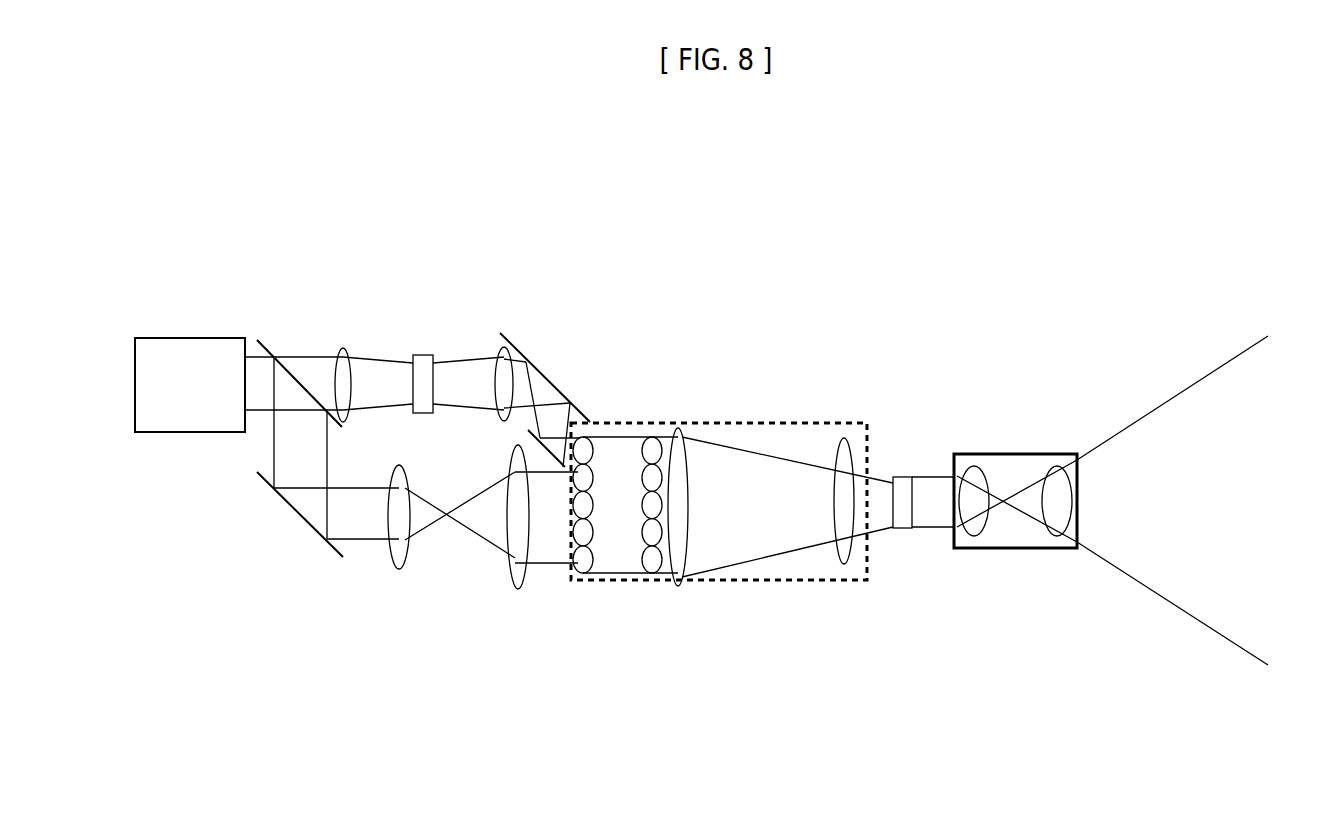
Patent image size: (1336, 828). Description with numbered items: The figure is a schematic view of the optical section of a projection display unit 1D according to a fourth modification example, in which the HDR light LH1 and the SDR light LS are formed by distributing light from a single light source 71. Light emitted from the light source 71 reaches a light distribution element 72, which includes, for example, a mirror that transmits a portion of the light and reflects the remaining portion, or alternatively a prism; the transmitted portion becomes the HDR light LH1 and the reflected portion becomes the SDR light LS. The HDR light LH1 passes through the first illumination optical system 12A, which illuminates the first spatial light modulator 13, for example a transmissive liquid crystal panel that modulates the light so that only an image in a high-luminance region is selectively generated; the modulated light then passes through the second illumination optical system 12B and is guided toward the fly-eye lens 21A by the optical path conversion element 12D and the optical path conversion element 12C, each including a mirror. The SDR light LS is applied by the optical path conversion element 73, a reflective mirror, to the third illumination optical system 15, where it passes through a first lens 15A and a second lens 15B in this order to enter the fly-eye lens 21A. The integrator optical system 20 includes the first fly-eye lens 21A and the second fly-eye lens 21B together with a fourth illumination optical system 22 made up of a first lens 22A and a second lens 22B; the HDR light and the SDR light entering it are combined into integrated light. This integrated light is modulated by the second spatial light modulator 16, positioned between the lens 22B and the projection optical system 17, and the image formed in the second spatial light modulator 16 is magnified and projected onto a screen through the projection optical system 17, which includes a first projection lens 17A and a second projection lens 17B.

The projection display unit 1D is at (940, 222).
The light source 71 is at (187, 338).
The light distribution element 72 is at (272, 353).
The optical path conversion element 73 is at (300, 515).
The first illumination optical system 12A is at (340, 349).
The second illumination optical system 12B is at (497, 349).
The optical path conversion element 12C is at (528, 431).
The optical path conversion element 12D is at (514, 346).
The first spatial light modulator 13 is at (421, 355).
The third illumination optical system 15 is at (460, 572).
The first lens 15A is at (399, 569).
The second lens 15B is at (518, 550).
The second spatial light modulator 16 is at (899, 477).
The projection optical system 17 is at (1111, 500).
The first projection lens 17A is at (971, 466).
The second projection lens 17B is at (1057, 466).
The integrator optical system 20 is at (718, 465).
The first fly-eye lens 21A is at (580, 438).
The second fly-eye lens 21B is at (652, 437).
The fourth illumination optical system 22 is at (775, 563).
The first lens 22A is at (678, 588).
The second lens 22B is at (845, 544).
The HDR light LH1 is at (327, 410).
The SDR light LS is at (325, 468).